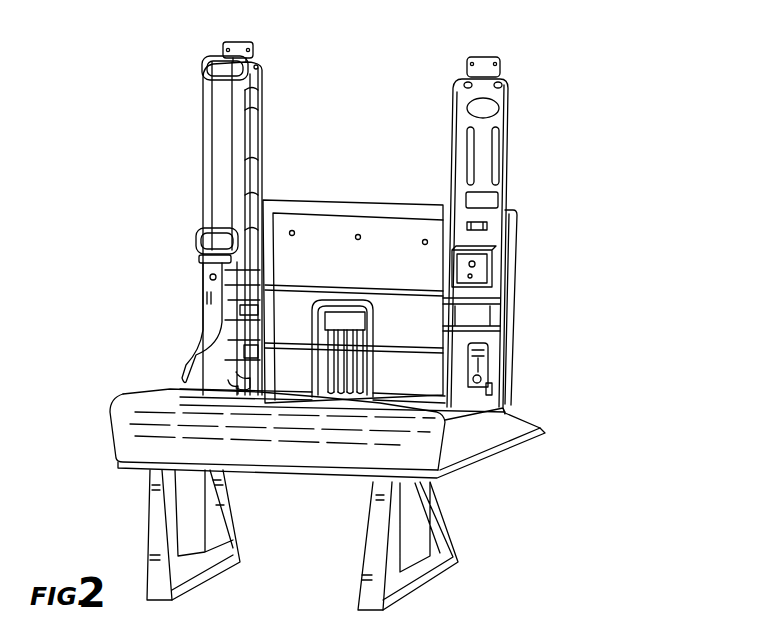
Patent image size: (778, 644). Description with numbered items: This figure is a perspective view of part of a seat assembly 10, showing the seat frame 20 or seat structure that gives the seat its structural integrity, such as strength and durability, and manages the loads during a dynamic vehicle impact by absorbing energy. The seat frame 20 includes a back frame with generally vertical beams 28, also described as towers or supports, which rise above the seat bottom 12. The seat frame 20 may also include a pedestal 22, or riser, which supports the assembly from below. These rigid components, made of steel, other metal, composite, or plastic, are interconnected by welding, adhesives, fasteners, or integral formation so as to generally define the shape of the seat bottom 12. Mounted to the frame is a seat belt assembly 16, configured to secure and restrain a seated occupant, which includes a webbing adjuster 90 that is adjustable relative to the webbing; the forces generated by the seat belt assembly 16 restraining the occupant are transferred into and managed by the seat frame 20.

The seat assembly 10 is at (560, 58).
The seat bottom 12 is at (128, 410).
The seat belt assembly 16 is at (179, 117).
The seat frame 20 is at (562, 198).
The pedestal 22 is at (370, 540).
The beam 28 is at (258, 112).
The webbing adjuster 90 is at (196, 144).